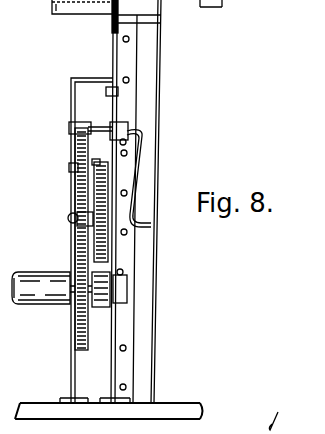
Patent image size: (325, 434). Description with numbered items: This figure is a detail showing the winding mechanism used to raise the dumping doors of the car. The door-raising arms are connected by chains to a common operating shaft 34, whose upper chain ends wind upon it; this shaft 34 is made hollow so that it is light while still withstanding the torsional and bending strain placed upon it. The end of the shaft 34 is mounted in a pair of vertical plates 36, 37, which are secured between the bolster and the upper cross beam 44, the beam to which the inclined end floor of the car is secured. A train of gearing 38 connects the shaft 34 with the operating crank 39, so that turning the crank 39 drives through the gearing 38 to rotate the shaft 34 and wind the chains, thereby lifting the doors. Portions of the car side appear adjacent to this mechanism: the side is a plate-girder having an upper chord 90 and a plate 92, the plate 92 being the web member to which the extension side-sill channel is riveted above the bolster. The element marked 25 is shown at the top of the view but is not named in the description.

The frame member 25 is at (200, 5).
The operating shaft 34 is at (50, 303).
The vertical plate 36 is at (72, 90).
The vertical plate 37 is at (118, 97).
The train of gearing 38 is at (68, 222).
The operating crank 39 is at (160, 138).
The upper cross beam 44 is at (122, 26).
The upper chord 90 is at (73, 14).
The plate 92 is at (93, 88).